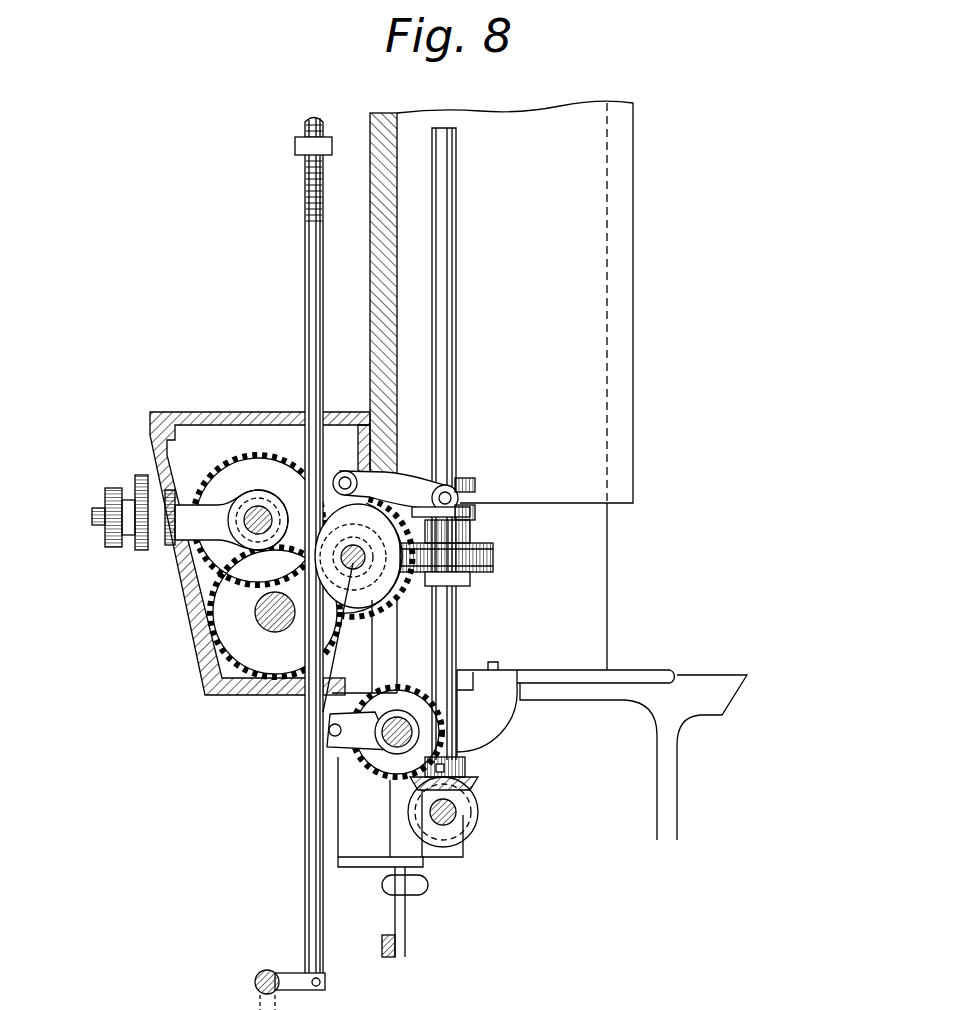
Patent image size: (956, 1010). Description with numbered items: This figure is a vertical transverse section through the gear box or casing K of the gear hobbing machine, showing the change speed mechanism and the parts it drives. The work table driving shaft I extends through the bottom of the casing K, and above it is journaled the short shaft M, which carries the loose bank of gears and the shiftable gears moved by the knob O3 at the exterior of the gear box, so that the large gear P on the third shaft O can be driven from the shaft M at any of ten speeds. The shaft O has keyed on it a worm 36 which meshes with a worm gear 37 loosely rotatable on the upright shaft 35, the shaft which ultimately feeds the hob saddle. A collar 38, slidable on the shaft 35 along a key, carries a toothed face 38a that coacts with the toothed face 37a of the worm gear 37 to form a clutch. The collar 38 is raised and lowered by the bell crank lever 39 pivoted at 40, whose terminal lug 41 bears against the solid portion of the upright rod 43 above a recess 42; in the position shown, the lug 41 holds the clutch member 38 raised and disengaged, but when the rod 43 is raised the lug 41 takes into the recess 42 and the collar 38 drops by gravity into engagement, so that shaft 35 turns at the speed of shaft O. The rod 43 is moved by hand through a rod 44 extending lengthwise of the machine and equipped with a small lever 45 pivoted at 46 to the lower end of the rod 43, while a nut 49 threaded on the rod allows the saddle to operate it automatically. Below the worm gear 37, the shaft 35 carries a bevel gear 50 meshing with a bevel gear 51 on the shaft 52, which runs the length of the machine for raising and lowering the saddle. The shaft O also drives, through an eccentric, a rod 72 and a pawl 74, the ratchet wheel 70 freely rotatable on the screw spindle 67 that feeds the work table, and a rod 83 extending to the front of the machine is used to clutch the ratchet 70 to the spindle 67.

The shaft 35 is at (457, 277).
The worm 36 is at (405, 586).
The worm gear 37 is at (493, 556).
The toothed clutch face 37a is at (470, 537).
The collar 38 is at (456, 488).
The toothed clutch face 38a is at (470, 515).
The bell crank lever 39 is at (400, 490).
The pivot 40 is at (345, 472).
The terminal lug 41 is at (320, 520).
The recess 42 is at (338, 550).
The upright rod 43 is at (282, 550).
The rod 44 is at (256, 976).
The small lever 45 is at (291, 972).
The pivot 46 is at (320, 988).
The lower nut 49 is at (298, 147).
The bevel gear 50 is at (478, 784).
The bevel gear 51 is at (470, 812).
The shaft 52 is at (452, 822).
The screw spindle 67 is at (400, 730).
The ratchet wheel 70 is at (386, 762).
The rod 72 is at (372, 660).
The pawl 74 is at (345, 713).
The rod 83 is at (392, 946).
The casing K is at (168, 600).
The short shaft M is at (249, 475).
The driving shaft I is at (272, 615).
The third shaft O is at (350, 568).
The knob O3 is at (113, 488).
The large gear P is at (388, 626).